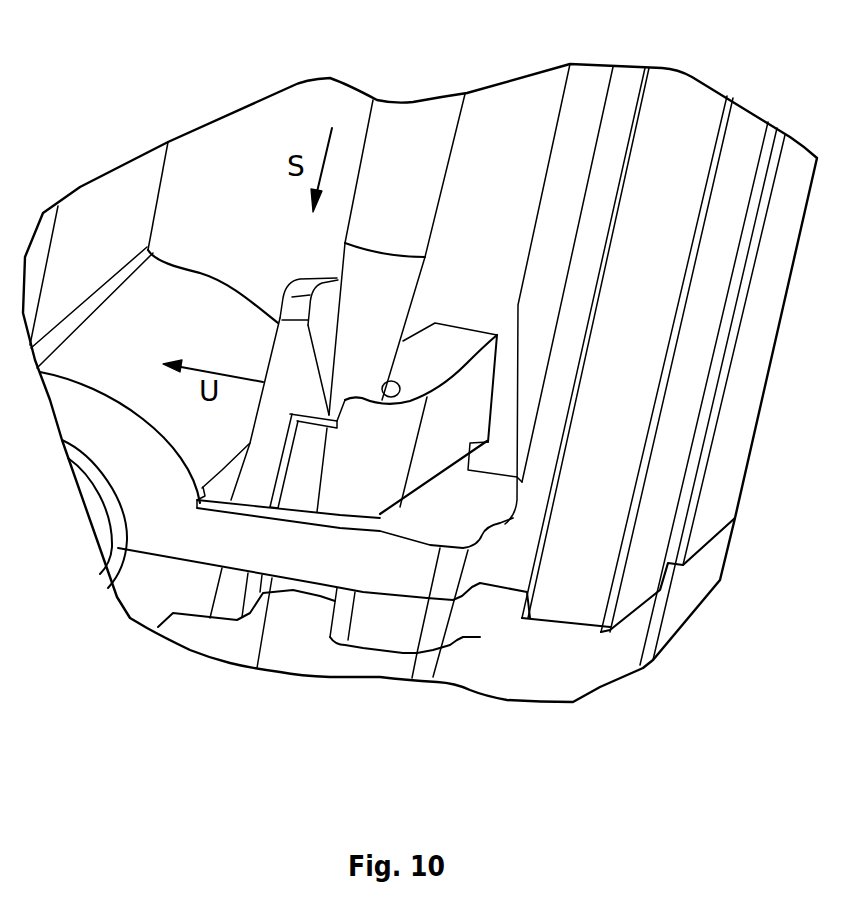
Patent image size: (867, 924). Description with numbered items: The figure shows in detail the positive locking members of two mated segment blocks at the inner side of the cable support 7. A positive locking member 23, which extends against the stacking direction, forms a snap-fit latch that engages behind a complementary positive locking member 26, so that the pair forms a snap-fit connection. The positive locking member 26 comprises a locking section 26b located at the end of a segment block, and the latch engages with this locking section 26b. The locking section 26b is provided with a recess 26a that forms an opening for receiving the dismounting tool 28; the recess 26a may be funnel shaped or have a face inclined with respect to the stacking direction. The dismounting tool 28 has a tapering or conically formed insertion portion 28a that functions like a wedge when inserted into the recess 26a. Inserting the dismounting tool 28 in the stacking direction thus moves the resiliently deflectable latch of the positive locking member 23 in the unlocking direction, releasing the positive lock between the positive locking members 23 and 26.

The cable support 7 is at (682, 90).
The positive locking member 23 is at (266, 334).
The positive locking member 26 is at (384, 416).
The recess 26a is at (390, 375).
The locking section 26b is at (297, 477).
The dismounting tool 28 is at (414, 130).
The insertion portion 28a is at (400, 303).